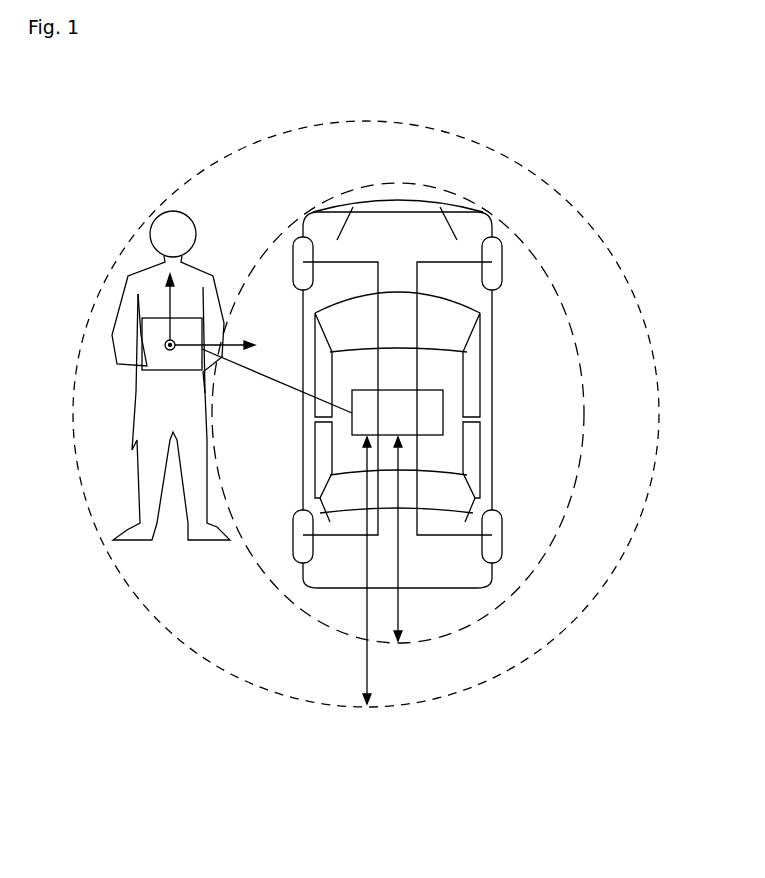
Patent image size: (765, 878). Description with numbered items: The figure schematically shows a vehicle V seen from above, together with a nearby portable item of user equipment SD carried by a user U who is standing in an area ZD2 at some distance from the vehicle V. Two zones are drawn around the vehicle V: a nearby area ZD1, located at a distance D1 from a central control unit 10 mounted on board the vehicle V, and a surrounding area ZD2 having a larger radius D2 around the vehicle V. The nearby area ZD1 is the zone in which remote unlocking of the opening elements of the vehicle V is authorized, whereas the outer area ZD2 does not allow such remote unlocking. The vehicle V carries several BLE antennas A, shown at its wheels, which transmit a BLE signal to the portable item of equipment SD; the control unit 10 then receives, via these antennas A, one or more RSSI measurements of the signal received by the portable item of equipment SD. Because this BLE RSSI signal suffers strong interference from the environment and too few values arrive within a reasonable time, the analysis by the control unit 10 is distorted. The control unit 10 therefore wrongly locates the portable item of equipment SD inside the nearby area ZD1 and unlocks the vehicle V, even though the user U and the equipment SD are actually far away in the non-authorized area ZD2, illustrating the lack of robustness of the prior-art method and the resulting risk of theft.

The vehicle V is at (400, 200).
The nearby area ZD1 is at (473, 623).
The area ZD2 is at (455, 130).
The BLE antennas A is at (293, 247).
The central control unit 10 is at (423, 412).
The distance D1 is at (407, 539).
The radius D2 is at (354, 570).
The user U is at (150, 227).
The portable item of user equipment SD is at (142, 360).